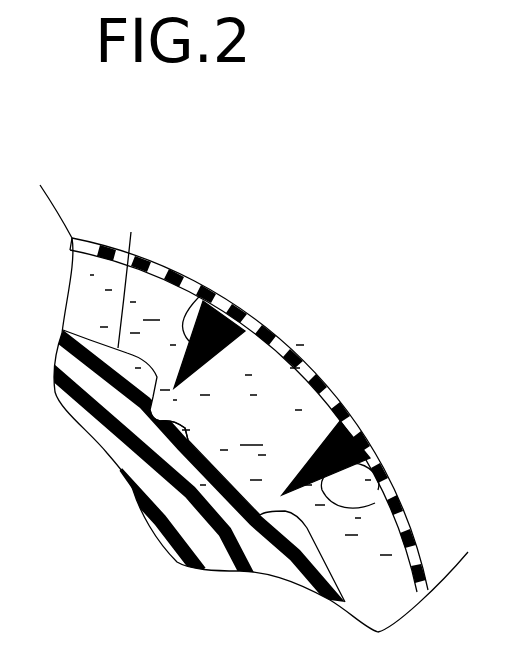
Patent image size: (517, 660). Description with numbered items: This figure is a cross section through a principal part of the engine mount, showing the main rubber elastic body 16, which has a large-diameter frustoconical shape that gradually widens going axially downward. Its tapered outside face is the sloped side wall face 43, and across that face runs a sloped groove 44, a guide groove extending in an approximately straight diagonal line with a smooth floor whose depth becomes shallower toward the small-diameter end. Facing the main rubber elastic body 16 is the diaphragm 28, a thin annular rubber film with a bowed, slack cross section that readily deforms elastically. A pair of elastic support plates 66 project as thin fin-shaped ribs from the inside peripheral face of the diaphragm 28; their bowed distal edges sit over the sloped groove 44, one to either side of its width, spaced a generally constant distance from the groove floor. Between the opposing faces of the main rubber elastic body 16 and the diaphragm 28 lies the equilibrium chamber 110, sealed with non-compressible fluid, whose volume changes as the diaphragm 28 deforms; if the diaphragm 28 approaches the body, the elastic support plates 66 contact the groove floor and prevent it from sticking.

The main rubber elastic body 16 is at (190, 540).
The diaphragm 28 is at (288, 352).
The sloped side wall face 43 is at (130, 276).
The sloped groove 44 is at (167, 427).
The elastic support plate 66 is at (204, 292).
The equilibrium chamber 110 is at (278, 430).